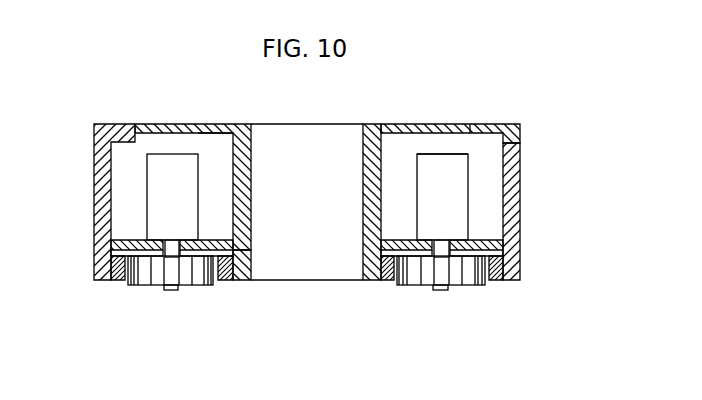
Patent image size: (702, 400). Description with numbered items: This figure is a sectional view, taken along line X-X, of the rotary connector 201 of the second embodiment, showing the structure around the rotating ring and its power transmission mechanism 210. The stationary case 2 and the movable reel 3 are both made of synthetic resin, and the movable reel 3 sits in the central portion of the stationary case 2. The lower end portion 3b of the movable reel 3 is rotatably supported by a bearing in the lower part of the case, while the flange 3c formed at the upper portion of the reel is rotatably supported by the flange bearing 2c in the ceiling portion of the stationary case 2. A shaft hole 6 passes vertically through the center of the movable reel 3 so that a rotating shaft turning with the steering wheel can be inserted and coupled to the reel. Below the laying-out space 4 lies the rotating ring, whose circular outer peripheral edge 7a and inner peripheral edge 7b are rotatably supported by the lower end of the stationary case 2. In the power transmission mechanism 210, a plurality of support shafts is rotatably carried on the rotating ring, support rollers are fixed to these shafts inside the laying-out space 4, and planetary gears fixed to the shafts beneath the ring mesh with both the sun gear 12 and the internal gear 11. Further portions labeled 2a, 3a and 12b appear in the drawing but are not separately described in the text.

The rotary connector 201 is at (521, 85).
The power transmission mechanism 210 is at (486, 304).
The stationary case 2 is at (522, 210).
The cover side wall 2a is at (496, 193).
The flange bearing 2c is at (125, 125).
The movable reel 3 is at (376, 127).
The holder side portion 3a is at (385, 199).
The lower end portion 3b is at (237, 266).
The flange 3c is at (190, 165).
The laying-out space 4 is at (413, 146).
The shaft hole 6 is at (253, 175).
The outer peripheral edge 7a is at (112, 243).
The inner peripheral edge 7b is at (238, 249).
The internal gear 11 is at (498, 281).
The sun gear 12 is at (388, 282).
The terminal 12b is at (235, 283).